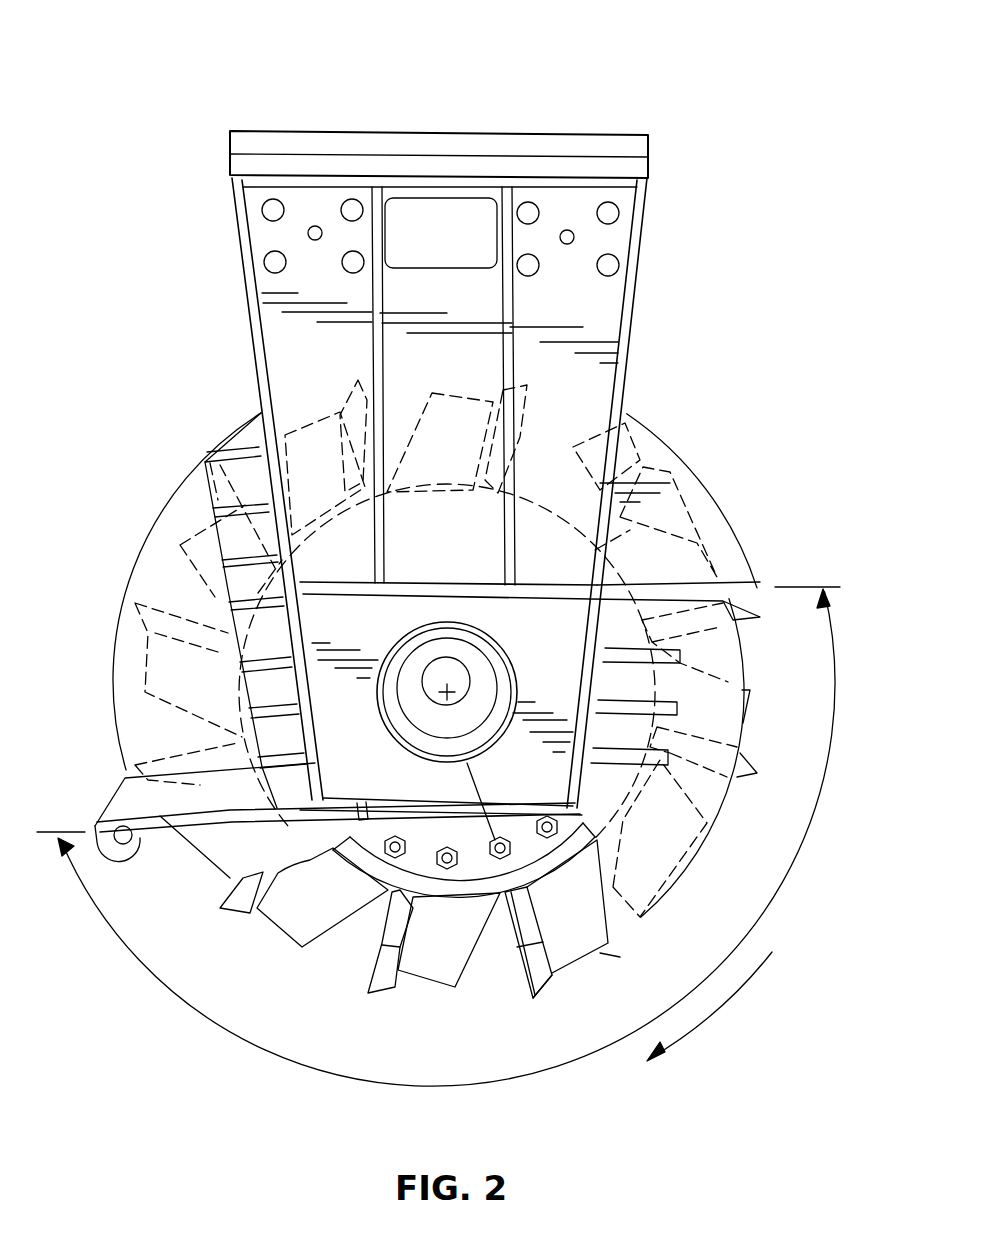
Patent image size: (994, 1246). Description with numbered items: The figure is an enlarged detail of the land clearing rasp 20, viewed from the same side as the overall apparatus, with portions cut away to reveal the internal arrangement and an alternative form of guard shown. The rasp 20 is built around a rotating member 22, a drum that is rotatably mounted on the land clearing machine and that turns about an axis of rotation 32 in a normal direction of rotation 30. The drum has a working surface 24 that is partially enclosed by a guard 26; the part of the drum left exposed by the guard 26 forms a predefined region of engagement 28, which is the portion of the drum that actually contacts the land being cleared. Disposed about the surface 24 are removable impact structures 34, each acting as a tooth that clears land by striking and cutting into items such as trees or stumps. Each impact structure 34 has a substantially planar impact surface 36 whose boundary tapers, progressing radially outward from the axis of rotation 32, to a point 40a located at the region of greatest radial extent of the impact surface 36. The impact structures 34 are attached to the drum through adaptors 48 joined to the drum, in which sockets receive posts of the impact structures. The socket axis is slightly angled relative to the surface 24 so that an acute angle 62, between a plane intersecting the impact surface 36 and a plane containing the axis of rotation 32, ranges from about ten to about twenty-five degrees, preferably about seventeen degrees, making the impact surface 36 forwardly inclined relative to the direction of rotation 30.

The land clearing rasp 20 is at (592, 104).
The rotating member 22 is at (407, 833).
The surface 24 is at (338, 867).
The guard 26 is at (160, 572).
The region of engagement 28 is at (835, 697).
The normal direction of rotation 30 is at (722, 1008).
The axis of rotation 32 is at (453, 692).
The impact structure 34 is at (386, 998).
The impact surface 36 is at (547, 913).
The point 40a is at (533, 998).
The adaptor 48 is at (593, 950).
The acute angle 62 is at (567, 913).